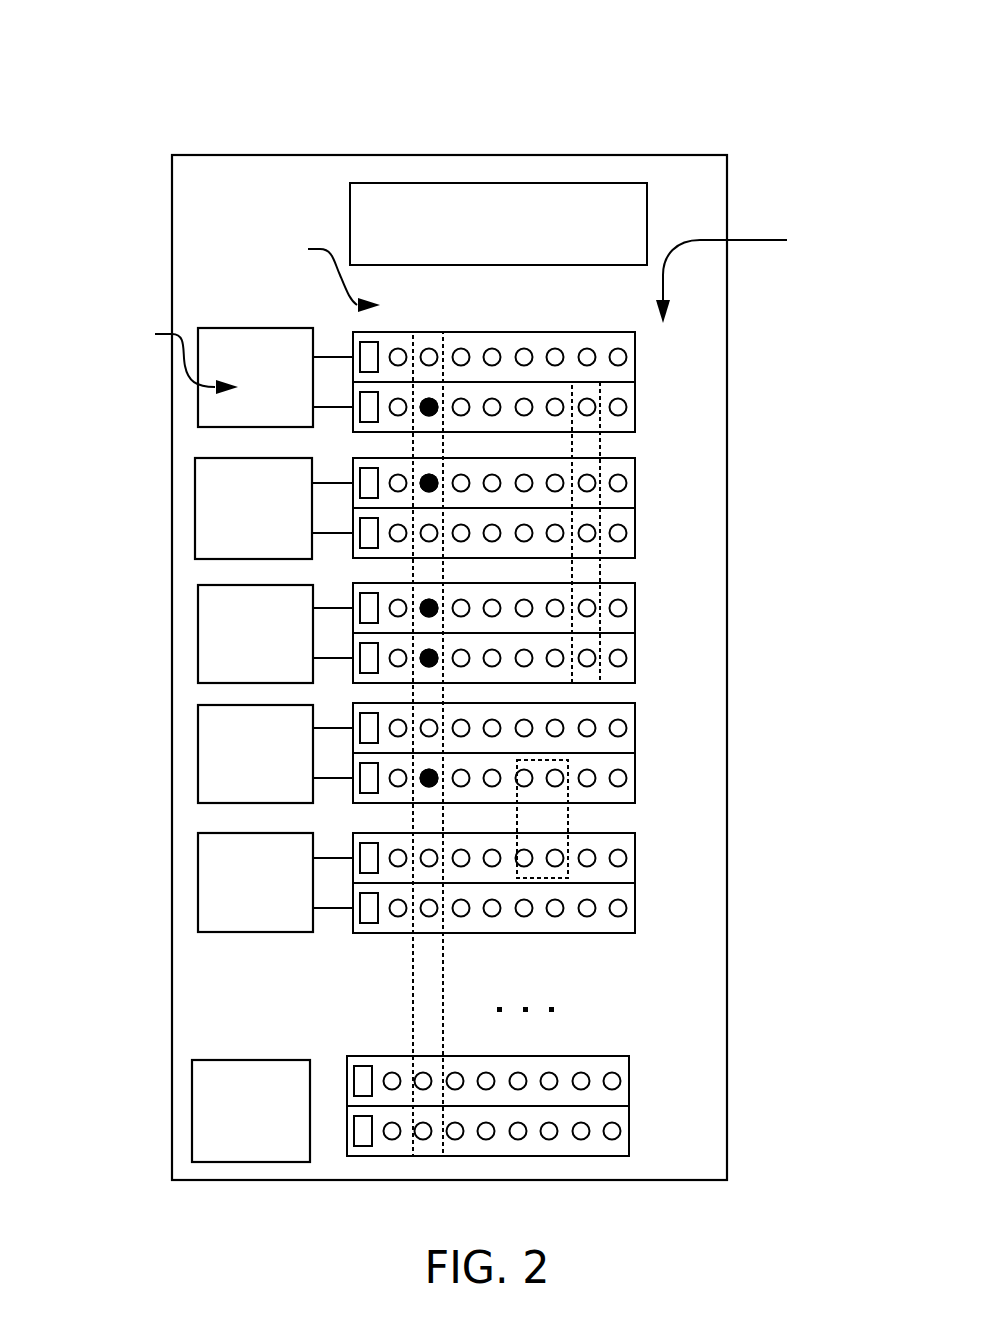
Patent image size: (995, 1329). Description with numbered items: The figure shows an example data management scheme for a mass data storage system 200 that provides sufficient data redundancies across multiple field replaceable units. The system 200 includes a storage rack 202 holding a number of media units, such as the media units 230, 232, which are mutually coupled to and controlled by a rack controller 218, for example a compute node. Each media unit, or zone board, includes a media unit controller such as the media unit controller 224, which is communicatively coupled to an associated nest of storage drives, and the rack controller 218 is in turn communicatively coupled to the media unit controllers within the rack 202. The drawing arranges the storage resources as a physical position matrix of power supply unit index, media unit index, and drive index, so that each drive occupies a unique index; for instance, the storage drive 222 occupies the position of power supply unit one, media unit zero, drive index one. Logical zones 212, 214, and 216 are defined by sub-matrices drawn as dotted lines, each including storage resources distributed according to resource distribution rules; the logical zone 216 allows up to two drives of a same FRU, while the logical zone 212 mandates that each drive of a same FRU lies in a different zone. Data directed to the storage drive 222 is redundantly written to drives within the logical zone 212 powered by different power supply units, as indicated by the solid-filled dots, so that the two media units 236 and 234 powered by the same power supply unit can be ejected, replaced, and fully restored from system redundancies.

The mass data storage system 200 is at (133, 80).
The storage rack 202 is at (308, 155).
The logical zone 212 is at (413, 1007).
The logical zone 214 is at (600, 572).
The logical zone 216 is at (568, 817).
The rack controller 218 is at (498, 224).
The storage drive 222 is at (427, 476).
The media unit controller 224 is at (367, 603).
The media unit 230 is at (357, 342).
The media unit 232 is at (635, 398).
The media unit 234 is at (633, 545).
The media unit 236 is at (635, 493).